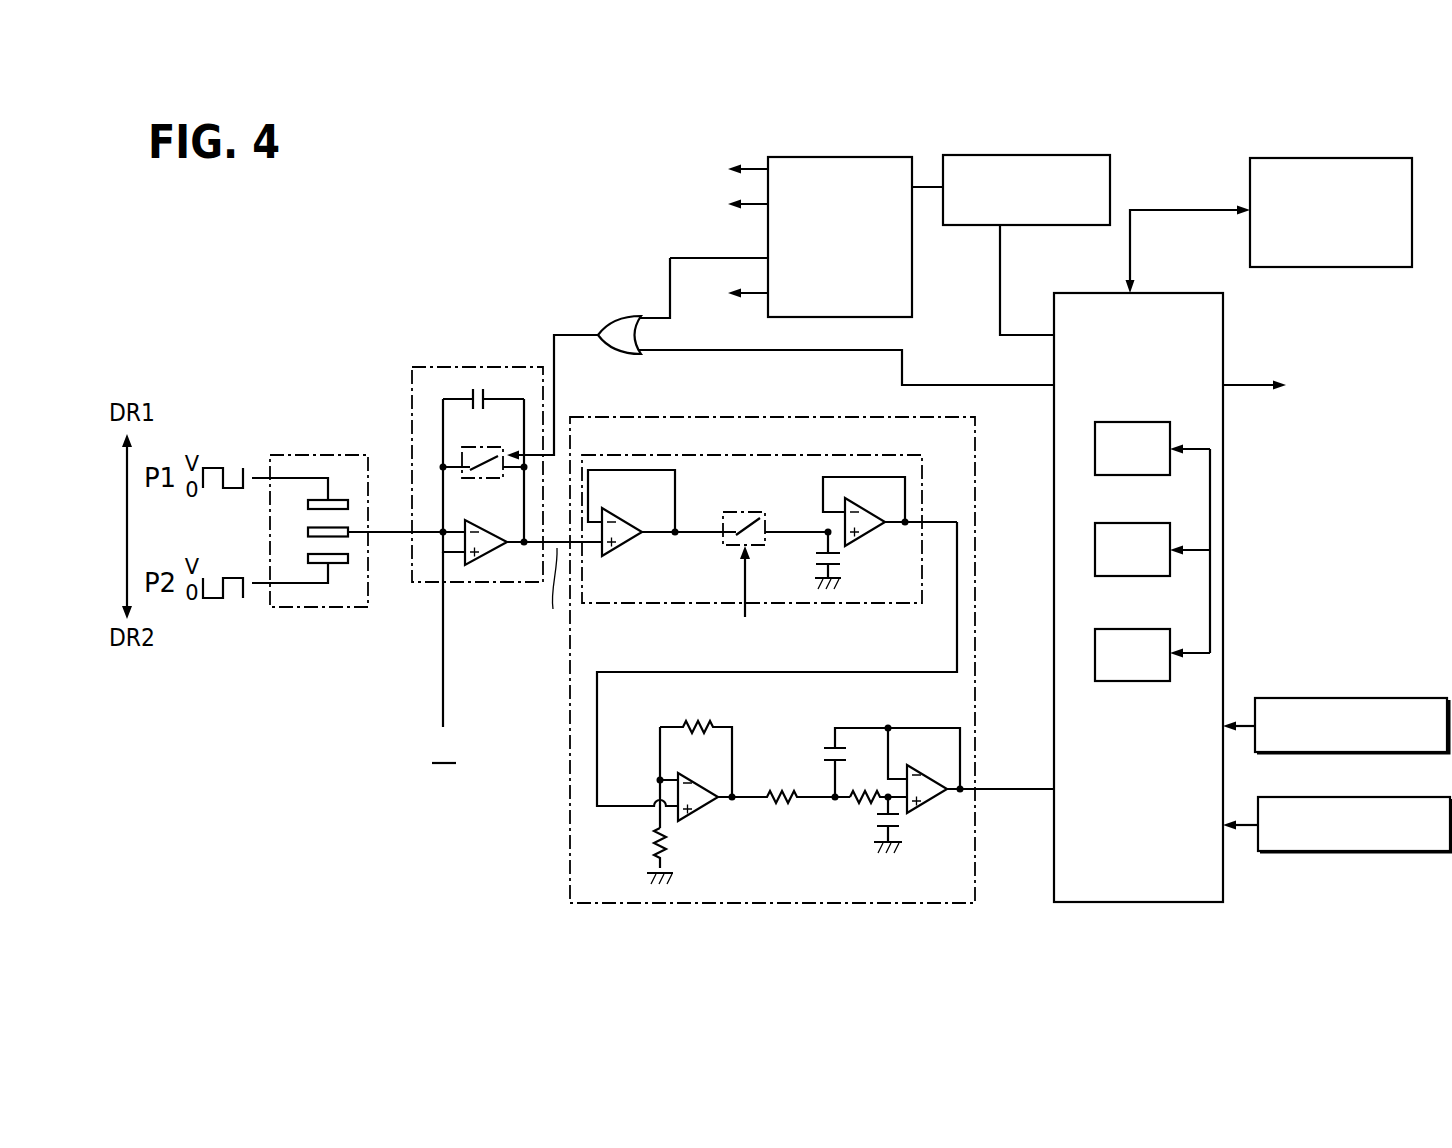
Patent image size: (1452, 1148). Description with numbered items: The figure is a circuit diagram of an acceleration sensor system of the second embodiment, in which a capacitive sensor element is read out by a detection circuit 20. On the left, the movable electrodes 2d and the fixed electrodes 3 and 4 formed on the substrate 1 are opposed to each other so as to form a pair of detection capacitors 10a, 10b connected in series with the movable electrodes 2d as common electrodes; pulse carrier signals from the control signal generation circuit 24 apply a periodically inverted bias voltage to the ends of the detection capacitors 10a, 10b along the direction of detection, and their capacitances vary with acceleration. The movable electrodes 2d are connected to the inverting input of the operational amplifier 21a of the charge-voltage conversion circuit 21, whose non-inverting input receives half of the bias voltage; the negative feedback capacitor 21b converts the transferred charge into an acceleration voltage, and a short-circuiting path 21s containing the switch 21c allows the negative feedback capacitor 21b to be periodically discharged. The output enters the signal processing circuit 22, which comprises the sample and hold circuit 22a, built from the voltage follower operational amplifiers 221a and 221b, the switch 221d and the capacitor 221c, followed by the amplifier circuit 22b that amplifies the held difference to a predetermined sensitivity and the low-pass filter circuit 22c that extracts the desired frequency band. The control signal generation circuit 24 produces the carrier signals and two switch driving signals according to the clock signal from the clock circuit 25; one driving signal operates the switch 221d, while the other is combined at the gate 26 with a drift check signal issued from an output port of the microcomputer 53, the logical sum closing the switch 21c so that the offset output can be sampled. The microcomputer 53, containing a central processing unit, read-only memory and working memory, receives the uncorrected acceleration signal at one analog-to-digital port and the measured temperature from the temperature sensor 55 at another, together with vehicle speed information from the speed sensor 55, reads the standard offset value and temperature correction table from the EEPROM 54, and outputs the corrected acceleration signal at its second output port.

The substrate 1 is at (311, 455).
The movable electrodes 2d is at (308, 532).
The fixed electrode 3 is at (308, 502).
The fixed electrode 4 is at (308, 559).
The detection capacitor 10a is at (355, 514).
The detection capacitor 10b is at (357, 547).
The detection circuit 20 is at (440, 233).
The charge-voltage conversion circuit 21 is at (515, 366).
The operational amplifier 21a is at (495, 527).
The negative feedback capacitor 21b is at (472, 389).
The switch 21c is at (478, 457).
The short-circuiting path 21s is at (452, 470).
The signal processing circuit 22 is at (823, 416).
The sample and hold circuit 22a is at (778, 453).
The amplifier circuit 22b is at (707, 809).
The low-pass filter circuit 22c is at (925, 808).
The operational amplifier 221a is at (876, 537).
The operational amplifier 221b is at (622, 547).
The capacitor 221c is at (818, 567).
The switch 221d is at (740, 526).
The control signal generation circuit 24 is at (844, 157).
The clock circuit 25 is at (1000, 155).
The gate 26 is at (613, 317).
The microcomputer 53 is at (1165, 293).
The EEPROM 54 is at (1272, 158).
The temperature sensor 55 is at (1327, 698).